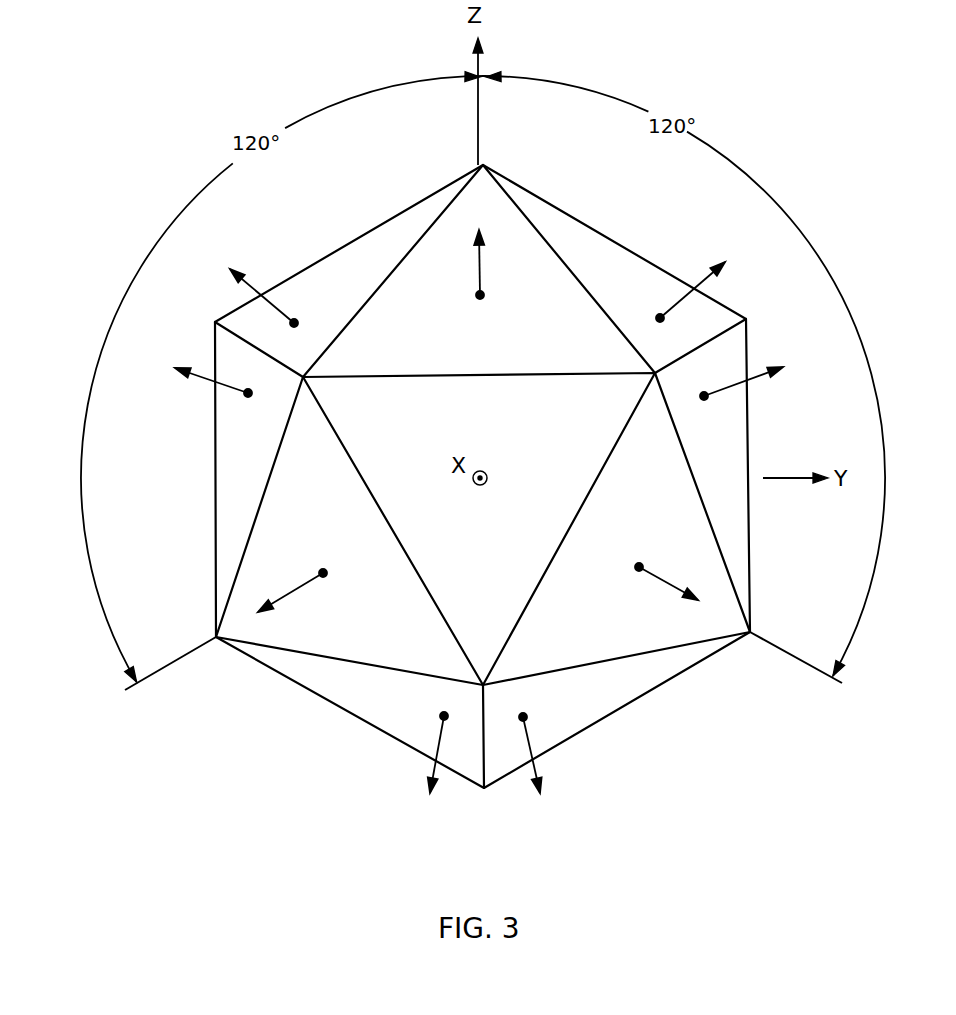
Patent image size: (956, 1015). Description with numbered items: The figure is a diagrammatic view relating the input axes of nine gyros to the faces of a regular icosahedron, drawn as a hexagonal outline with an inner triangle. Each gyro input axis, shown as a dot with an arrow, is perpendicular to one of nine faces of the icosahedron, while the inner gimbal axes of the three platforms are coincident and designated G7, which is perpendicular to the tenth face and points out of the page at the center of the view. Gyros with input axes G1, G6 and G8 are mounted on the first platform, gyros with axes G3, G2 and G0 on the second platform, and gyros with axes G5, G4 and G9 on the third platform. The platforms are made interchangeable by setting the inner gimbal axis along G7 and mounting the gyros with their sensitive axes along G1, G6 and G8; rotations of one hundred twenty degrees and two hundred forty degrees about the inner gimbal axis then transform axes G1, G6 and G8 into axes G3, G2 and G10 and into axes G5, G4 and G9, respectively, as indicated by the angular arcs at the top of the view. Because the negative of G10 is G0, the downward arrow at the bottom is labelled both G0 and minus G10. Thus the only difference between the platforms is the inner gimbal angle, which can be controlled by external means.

The gyro input axis G0 is at (546, 768).
The gyro input axis G1 is at (673, 600).
The gyro input axis G2 is at (758, 378).
The gyro input axis G3 is at (493, 264).
The gyro input axis G4 is at (247, 292).
The gyro input axis G5 is at (292, 606).
The gyro input axis G6 is at (433, 769).
The inner gimbal axis G7 is at (498, 469).
The gyro input axis G8 is at (199, 377).
The gyro input axis G9 is at (708, 286).
The gyro input axis G10 is at (623, 807).